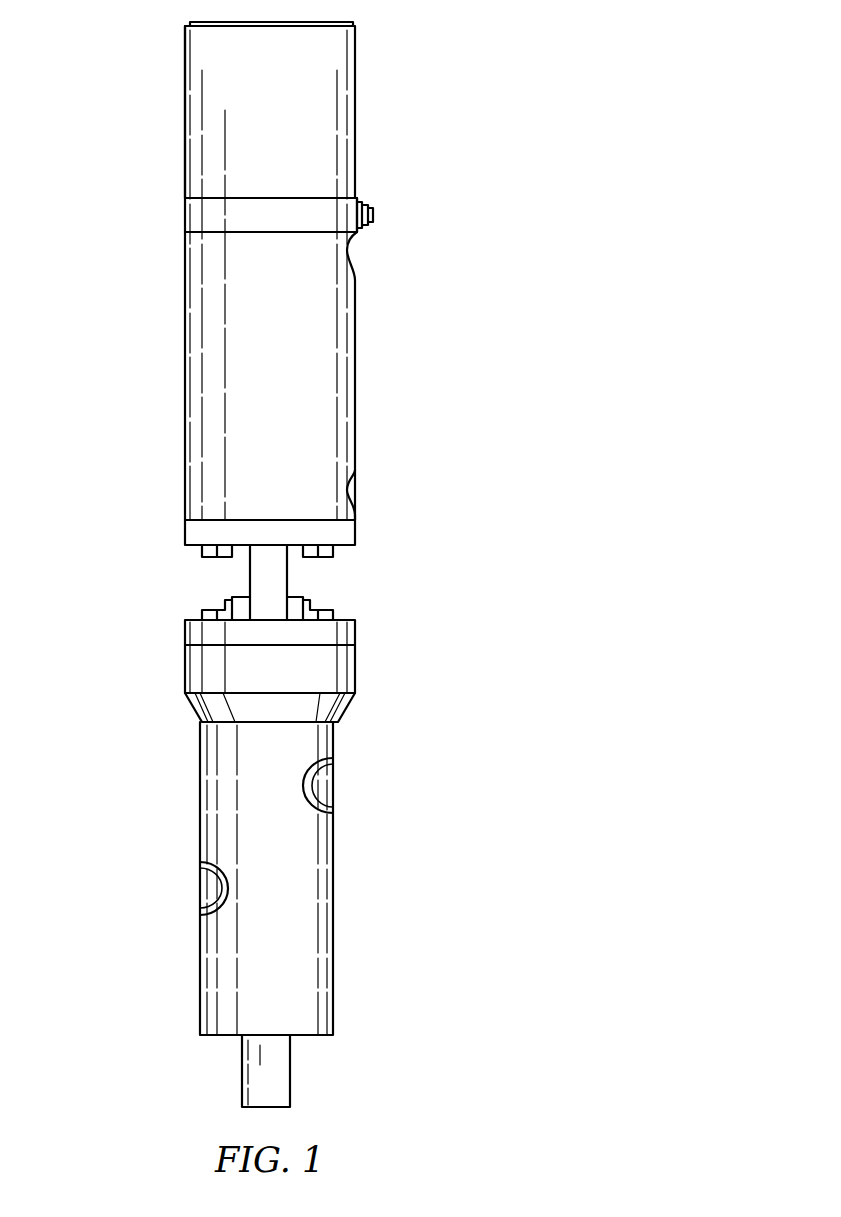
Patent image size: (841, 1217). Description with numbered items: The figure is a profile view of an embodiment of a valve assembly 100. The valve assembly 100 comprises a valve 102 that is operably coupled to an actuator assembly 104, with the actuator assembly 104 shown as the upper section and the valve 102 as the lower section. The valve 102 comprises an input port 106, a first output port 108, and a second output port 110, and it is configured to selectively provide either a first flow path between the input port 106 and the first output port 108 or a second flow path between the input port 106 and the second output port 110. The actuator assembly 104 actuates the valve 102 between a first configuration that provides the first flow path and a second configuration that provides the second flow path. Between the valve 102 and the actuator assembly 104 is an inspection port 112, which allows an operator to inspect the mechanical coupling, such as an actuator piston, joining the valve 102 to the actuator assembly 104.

The valve assembly 100 is at (436, 46).
The valve 102 is at (140, 645).
The actuator assembly 104 is at (147, 25).
The input port 106 is at (336, 787).
The first output port 108 is at (198, 890).
The second output port 110 is at (275, 1107).
The inspection port 112 is at (143, 525).